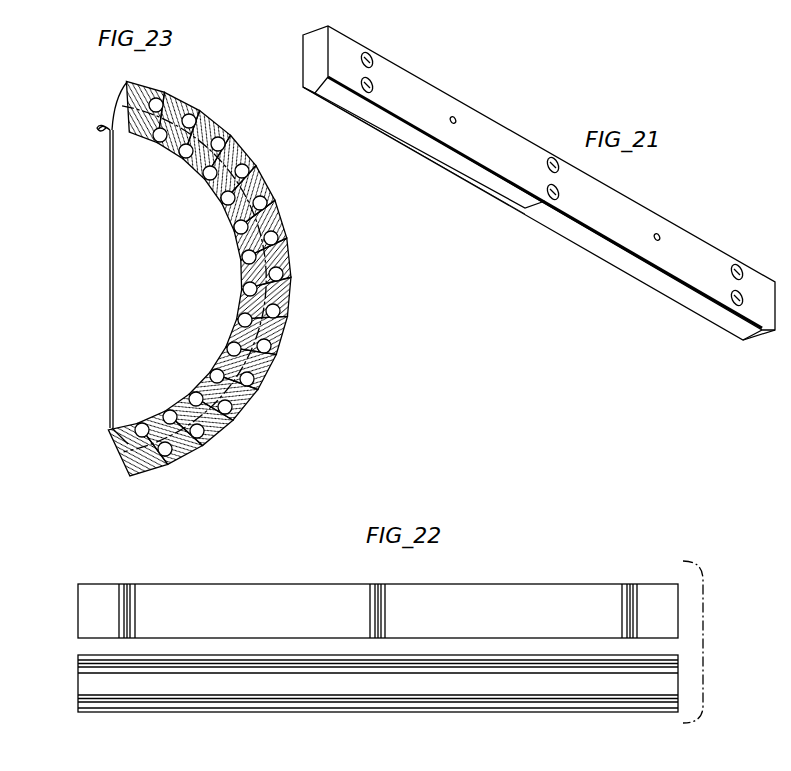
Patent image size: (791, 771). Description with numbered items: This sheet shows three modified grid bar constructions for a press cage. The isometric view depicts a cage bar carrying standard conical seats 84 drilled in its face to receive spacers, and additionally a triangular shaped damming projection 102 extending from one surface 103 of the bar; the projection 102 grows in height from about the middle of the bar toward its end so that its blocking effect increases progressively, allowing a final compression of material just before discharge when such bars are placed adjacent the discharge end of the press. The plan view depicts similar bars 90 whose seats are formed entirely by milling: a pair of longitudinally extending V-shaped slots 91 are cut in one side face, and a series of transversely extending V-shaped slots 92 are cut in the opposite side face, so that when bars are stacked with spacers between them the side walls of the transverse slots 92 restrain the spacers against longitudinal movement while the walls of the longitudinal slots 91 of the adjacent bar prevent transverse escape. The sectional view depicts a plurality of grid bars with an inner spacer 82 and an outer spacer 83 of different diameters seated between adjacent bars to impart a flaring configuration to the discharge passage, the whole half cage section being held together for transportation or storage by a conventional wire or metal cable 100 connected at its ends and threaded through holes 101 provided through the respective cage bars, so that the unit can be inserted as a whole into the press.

In FIG. 23, the inner spacer 82 is at (233, 228).
In FIG. 23, the outer spacer 83 is at (268, 207).
In FIG. 21, the conical seats 84 is at (372, 57).
In FIG. 22, the bars 90 is at (213, 585).
In FIG. 22, the longitudinally extending V-shaped slots 91 is at (405, 661).
In FIG. 22, the transversely extending V-shaped slots 92 is at (128, 593).
In FIG. 23, the cable 100 is at (113, 248).
In FIG. 23, the holes 101 is at (272, 188).
In FIG. 21, the holes 101 is at (457, 118).
In FIG. 21, the damming projection 102 is at (373, 120).
In FIG. 21, the surface 103 is at (635, 267).